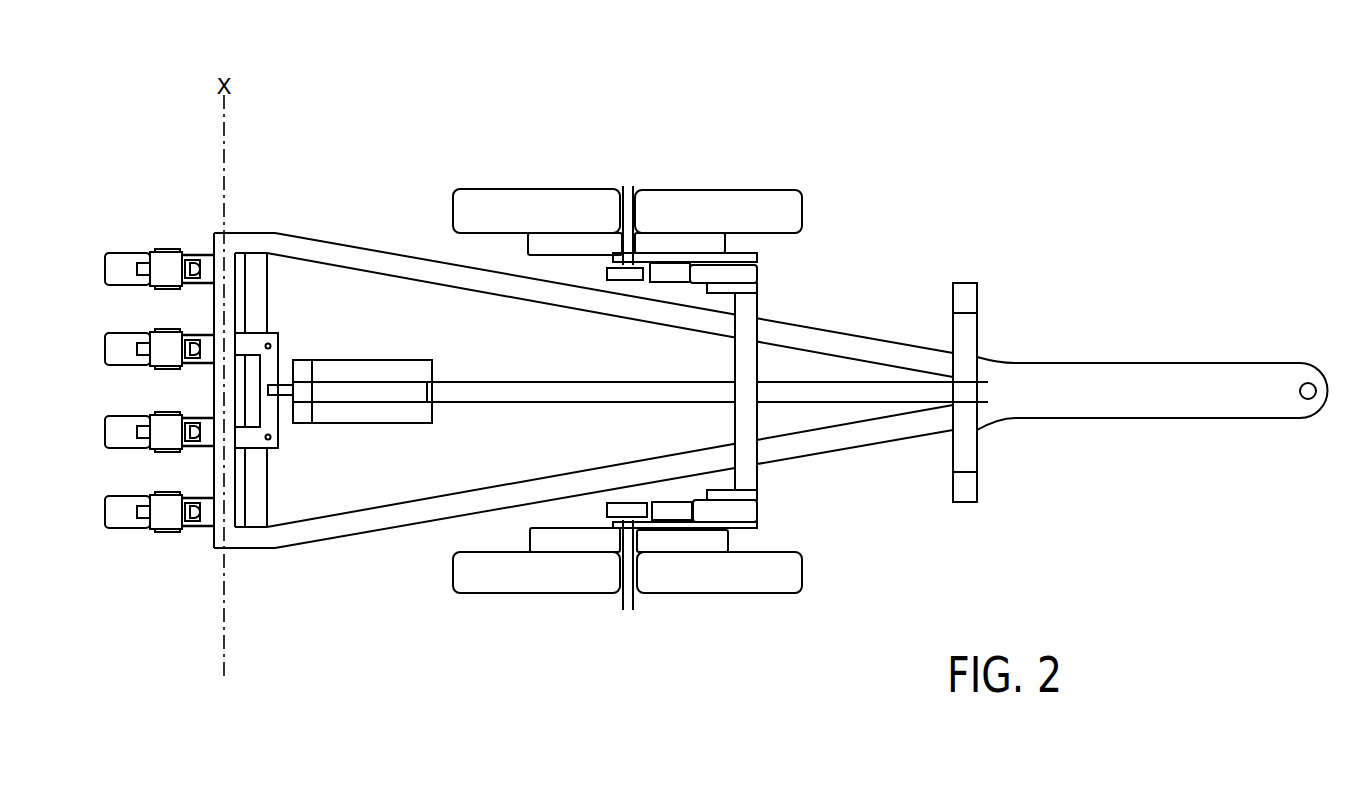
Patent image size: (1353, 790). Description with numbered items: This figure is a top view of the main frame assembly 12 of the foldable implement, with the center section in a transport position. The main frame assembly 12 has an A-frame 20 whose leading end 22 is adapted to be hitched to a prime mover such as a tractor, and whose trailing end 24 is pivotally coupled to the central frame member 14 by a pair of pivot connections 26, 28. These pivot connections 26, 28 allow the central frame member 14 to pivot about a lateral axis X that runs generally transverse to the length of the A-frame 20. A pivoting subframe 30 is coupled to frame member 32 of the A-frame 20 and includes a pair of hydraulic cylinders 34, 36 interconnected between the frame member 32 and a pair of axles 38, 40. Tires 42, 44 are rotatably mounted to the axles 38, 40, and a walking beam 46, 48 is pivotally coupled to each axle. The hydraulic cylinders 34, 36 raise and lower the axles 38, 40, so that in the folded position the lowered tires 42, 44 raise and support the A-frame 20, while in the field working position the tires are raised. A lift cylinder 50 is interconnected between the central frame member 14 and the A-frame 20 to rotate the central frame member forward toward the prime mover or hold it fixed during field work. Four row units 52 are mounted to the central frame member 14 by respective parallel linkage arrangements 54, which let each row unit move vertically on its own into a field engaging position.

The main frame assembly 12 is at (932, 151).
The central frame member 14 is at (203, 385).
The A-frame 20 is at (865, 440).
The leading end 22 is at (1283, 372).
The trailing end 24 is at (258, 545).
The pivot connection 26 is at (218, 252).
The pivot connection 28 is at (220, 530).
The pivoting subframe 30 is at (749, 611).
The frame member 32 is at (750, 468).
The hydraulic cylinder 34 is at (745, 272).
The hydraulic cylinder 36 is at (740, 512).
The axle 38 is at (628, 193).
The axle 40 is at (628, 598).
The tires 42 is at (500, 200).
The tires 44 is at (500, 580).
The walking beam 46 is at (530, 238).
The walking beam 48 is at (530, 541).
The lift cylinder 50 is at (368, 388).
The row units 52 is at (120, 279).
The parallel linkage arrangements 54 is at (165, 341).